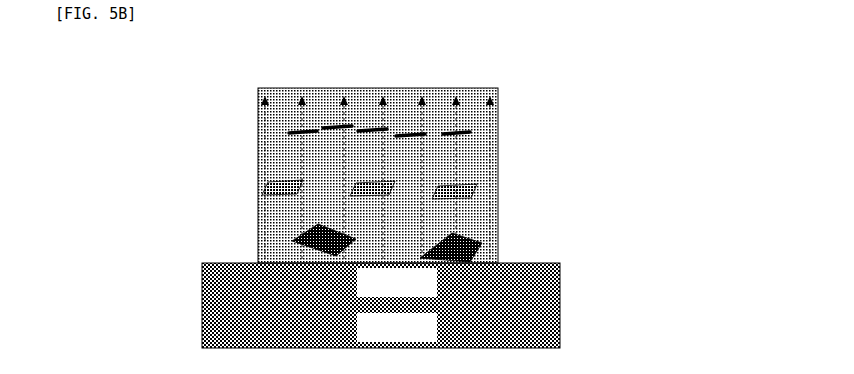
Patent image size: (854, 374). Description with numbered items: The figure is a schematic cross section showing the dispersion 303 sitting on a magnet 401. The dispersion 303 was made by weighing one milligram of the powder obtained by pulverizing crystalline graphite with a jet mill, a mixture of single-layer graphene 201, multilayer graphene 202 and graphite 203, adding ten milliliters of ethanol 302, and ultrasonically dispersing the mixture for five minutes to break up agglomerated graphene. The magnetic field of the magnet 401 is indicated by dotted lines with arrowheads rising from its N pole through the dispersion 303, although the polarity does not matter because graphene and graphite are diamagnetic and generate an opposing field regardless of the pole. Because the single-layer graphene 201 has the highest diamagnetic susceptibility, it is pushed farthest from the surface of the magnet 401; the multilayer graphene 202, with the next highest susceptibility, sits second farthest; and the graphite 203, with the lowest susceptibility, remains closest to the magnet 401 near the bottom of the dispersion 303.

The ethanol 302 is at (496, 88).
The single-layer graphene 201 is at (466, 133).
The multilayer graphene 202 is at (440, 193).
The graphite 203 is at (483, 243).
The dispersion 303 is at (515, 156).
The magnet 401 is at (559, 312).